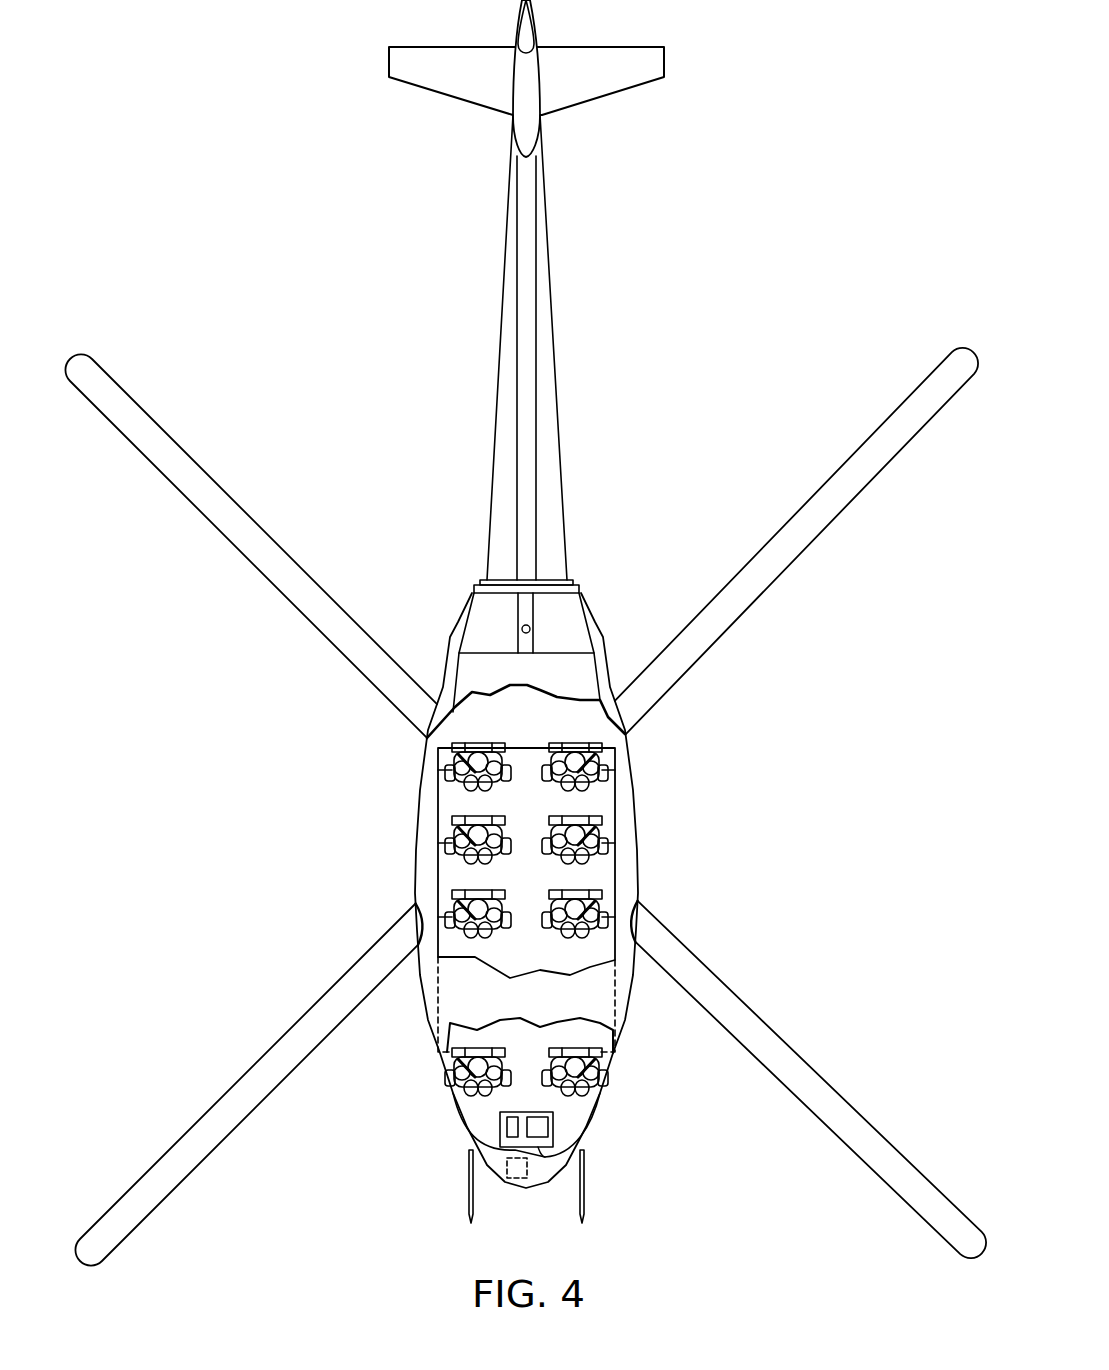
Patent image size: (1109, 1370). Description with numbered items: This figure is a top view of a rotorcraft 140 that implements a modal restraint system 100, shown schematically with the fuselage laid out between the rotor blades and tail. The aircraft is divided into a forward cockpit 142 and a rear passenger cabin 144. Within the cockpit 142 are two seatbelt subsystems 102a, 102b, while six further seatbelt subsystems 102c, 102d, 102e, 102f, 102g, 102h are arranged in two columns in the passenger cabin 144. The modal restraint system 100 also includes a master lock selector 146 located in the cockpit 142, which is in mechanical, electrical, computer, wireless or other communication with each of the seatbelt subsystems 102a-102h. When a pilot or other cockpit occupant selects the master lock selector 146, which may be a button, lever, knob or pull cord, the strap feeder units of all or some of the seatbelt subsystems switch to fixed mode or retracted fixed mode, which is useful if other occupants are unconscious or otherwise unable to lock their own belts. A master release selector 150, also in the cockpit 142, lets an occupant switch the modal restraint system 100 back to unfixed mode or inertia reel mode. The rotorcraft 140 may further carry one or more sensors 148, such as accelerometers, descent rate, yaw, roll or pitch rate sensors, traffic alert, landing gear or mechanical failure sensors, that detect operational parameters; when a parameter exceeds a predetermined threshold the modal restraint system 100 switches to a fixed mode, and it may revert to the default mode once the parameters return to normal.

The rotorcraft 140 is at (525, 633).
The passenger cabin 144 is at (548, 731).
The seatbelt subsystem 102a is at (452, 1072).
The seatbelt subsystem 102b is at (602, 1071).
The seatbelt subsystem 102c is at (438, 917).
The seatbelt subsystem 102d is at (615, 917).
The seatbelt subsystem 102e is at (438, 843).
The seatbelt subsystem 102f is at (615, 843).
The seatbelt subsystem 102g is at (438, 770).
The seatbelt subsystem 102h is at (615, 770).
The modal restraint system 100 is at (529, 1145).
The cockpit 142 is at (500, 1127).
The master release selector 150 is at (502, 1133).
The master lock selector 146 is at (585, 1177).
The sensors 148 is at (497, 1170).